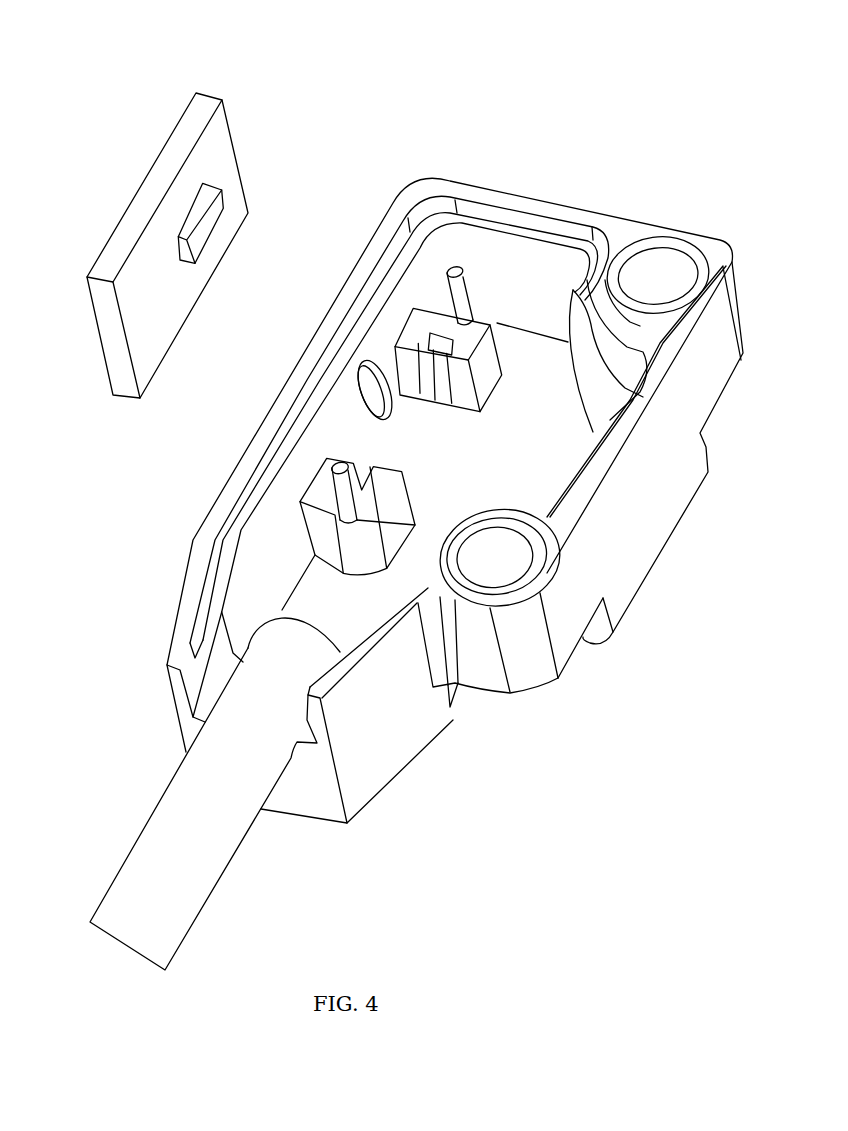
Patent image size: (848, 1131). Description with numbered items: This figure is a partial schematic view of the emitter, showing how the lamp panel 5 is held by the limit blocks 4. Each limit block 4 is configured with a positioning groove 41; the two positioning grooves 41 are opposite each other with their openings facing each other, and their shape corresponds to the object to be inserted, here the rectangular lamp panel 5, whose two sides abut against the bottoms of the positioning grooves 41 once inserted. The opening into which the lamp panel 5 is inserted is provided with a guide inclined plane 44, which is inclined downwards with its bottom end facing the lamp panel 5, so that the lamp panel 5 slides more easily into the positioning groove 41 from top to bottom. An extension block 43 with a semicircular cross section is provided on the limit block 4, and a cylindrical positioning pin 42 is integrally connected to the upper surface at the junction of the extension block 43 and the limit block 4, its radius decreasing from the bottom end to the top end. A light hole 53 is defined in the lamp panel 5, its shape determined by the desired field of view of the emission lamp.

The limit block 4 is at (325, 493).
The lamp panel 5 is at (213, 147).
The positioning groove 41 is at (432, 347).
The positioning pin 42 is at (455, 268).
The extension block 43 is at (357, 557).
The guide inclined plane 44 is at (430, 342).
The light hole 53 is at (192, 208).